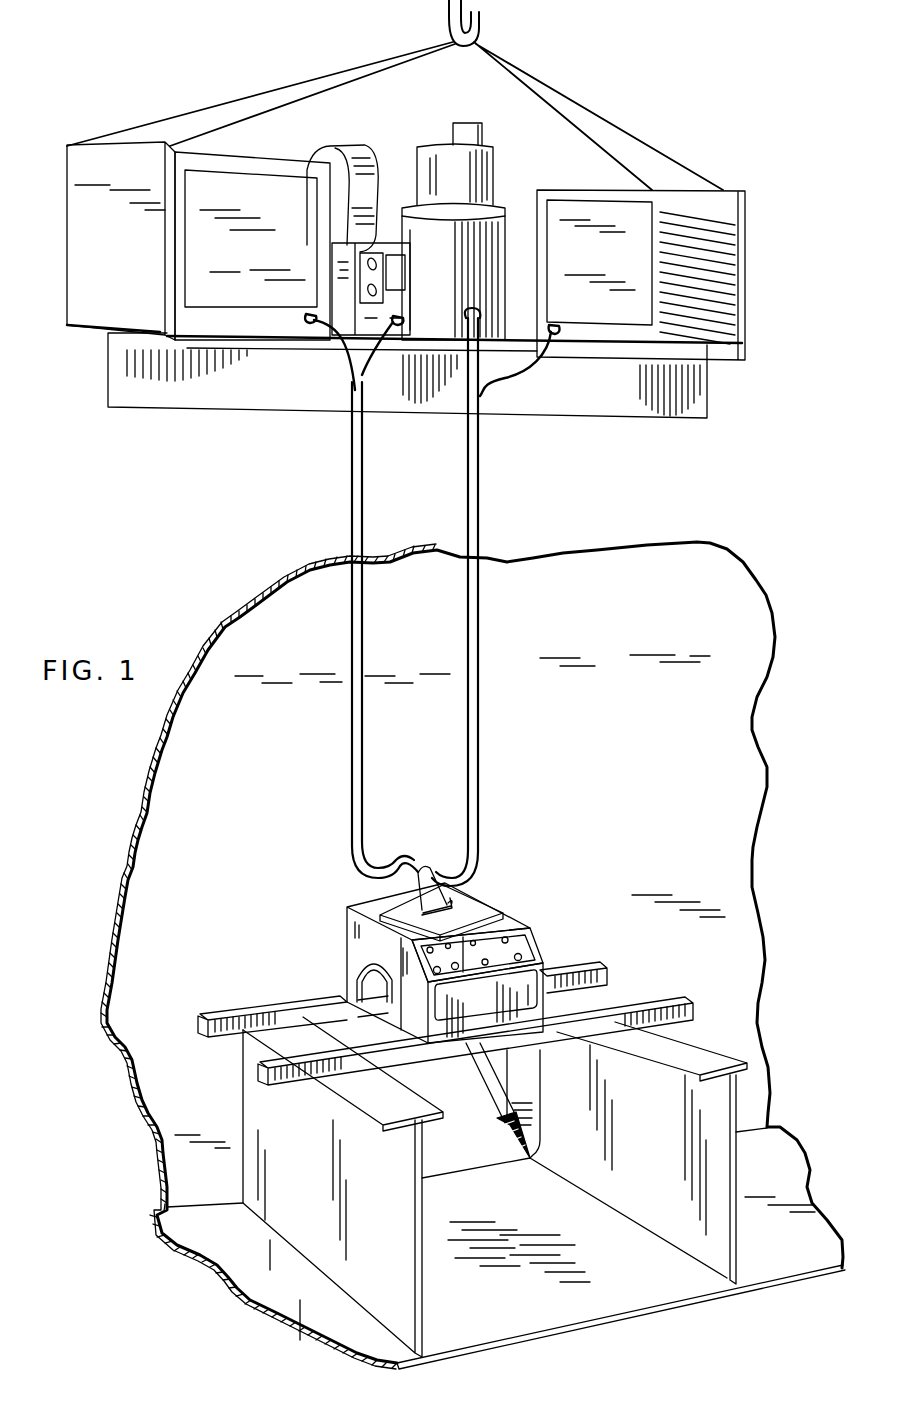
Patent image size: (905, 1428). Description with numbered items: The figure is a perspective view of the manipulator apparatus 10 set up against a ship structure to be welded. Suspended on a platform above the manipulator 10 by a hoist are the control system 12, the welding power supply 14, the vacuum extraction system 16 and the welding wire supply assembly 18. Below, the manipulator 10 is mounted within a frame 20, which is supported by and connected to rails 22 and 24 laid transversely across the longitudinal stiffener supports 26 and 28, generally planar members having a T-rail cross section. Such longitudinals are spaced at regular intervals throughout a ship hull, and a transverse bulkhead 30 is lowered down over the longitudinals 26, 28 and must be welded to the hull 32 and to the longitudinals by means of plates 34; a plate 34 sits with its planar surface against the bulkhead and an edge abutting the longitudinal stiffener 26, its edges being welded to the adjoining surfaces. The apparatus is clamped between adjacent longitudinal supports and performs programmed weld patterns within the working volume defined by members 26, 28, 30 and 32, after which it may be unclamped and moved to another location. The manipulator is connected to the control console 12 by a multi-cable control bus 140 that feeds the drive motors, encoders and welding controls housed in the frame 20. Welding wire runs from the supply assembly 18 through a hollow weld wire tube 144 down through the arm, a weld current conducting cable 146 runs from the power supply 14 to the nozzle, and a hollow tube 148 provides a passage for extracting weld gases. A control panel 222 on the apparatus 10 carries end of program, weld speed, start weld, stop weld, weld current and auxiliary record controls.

The manipulator apparatus 10 is at (508, 877).
The control system 12 is at (262, 165).
The welding power supply 14 is at (565, 187).
The vacuum extraction system 16 is at (435, 155).
The welding wire supply assembly 18 is at (375, 143).
The frame 20 is at (347, 932).
The rail 22 is at (200, 1030).
The rail 24 is at (263, 1072).
The longitudinal stiffener support 26 is at (737, 1181).
The longitudinal stiffener support 28 is at (400, 1247).
The transverse bulkhead 30 is at (268, 762).
The hull 32 is at (360, 1334).
The plate 34 is at (570, 1077).
The multi-cable control bus 140 is at (348, 355).
The hollow weld wire tube 144 is at (351, 497).
The weld current conducting cable 146 is at (515, 367).
The hollow tube 148 is at (482, 517).
The control panel 222 is at (513, 945).